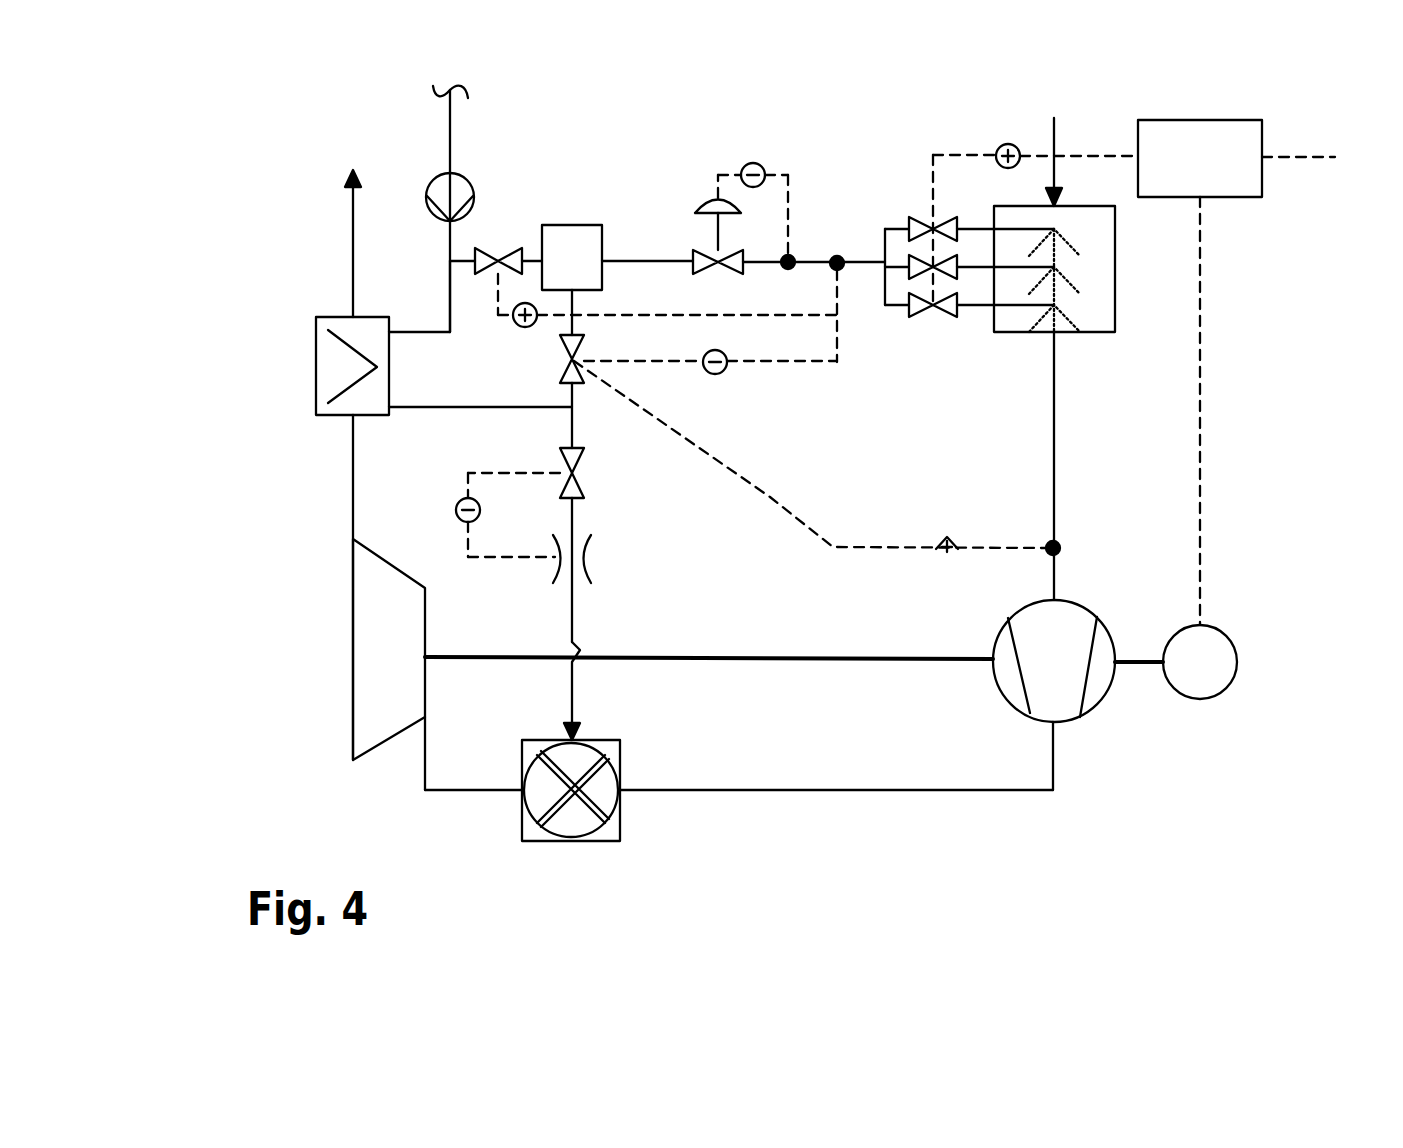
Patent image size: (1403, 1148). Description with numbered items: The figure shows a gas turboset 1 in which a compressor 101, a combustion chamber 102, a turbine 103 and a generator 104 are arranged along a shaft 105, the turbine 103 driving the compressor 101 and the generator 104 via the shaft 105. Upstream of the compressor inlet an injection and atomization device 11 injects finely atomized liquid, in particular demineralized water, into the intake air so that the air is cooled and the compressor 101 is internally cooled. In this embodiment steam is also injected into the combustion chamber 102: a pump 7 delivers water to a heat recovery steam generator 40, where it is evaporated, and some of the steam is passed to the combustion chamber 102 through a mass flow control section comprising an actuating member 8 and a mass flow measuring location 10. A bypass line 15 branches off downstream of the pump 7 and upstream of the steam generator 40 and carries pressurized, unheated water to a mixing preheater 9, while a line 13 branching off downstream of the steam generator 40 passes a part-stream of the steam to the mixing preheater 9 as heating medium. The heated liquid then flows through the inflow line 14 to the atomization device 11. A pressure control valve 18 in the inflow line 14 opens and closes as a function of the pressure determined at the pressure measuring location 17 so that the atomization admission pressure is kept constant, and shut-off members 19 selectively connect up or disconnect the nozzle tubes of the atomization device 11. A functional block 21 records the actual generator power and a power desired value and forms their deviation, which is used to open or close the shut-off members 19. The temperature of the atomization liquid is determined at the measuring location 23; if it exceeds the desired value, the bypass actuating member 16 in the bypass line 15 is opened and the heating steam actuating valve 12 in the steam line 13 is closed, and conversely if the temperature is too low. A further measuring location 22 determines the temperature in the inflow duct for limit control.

The gas turbine plant 1 is at (716, 721).
The pump 7 is at (427, 194).
The actuating member 8 is at (584, 487).
The mixing preheater 9 is at (566, 226).
The mass flow measuring location 10 is at (582, 560).
The injection and atomization device 11 is at (1080, 332).
The heating steam actuating valve 12 is at (579, 383).
The line 13 is at (572, 395).
The inflow line 14 is at (655, 259).
The bypass line 15 is at (457, 260).
The bypass actuating member 16 is at (499, 248).
The pressure measuring location 17 is at (793, 254).
The pressure control valve 18 is at (716, 258).
The shut-off members 19 is at (935, 318).
The functional block 21 is at (1213, 198).
The measuring location 22 is at (1061, 547).
The measuring location 23 is at (839, 271).
The heat recovery steam generator 40 is at (315, 378).
The compressor 101 is at (1080, 723).
The combustion chamber 102 is at (620, 835).
The turbine 103 is at (352, 706).
The generator 104 is at (1208, 700).
The shaft 105 is at (742, 661).